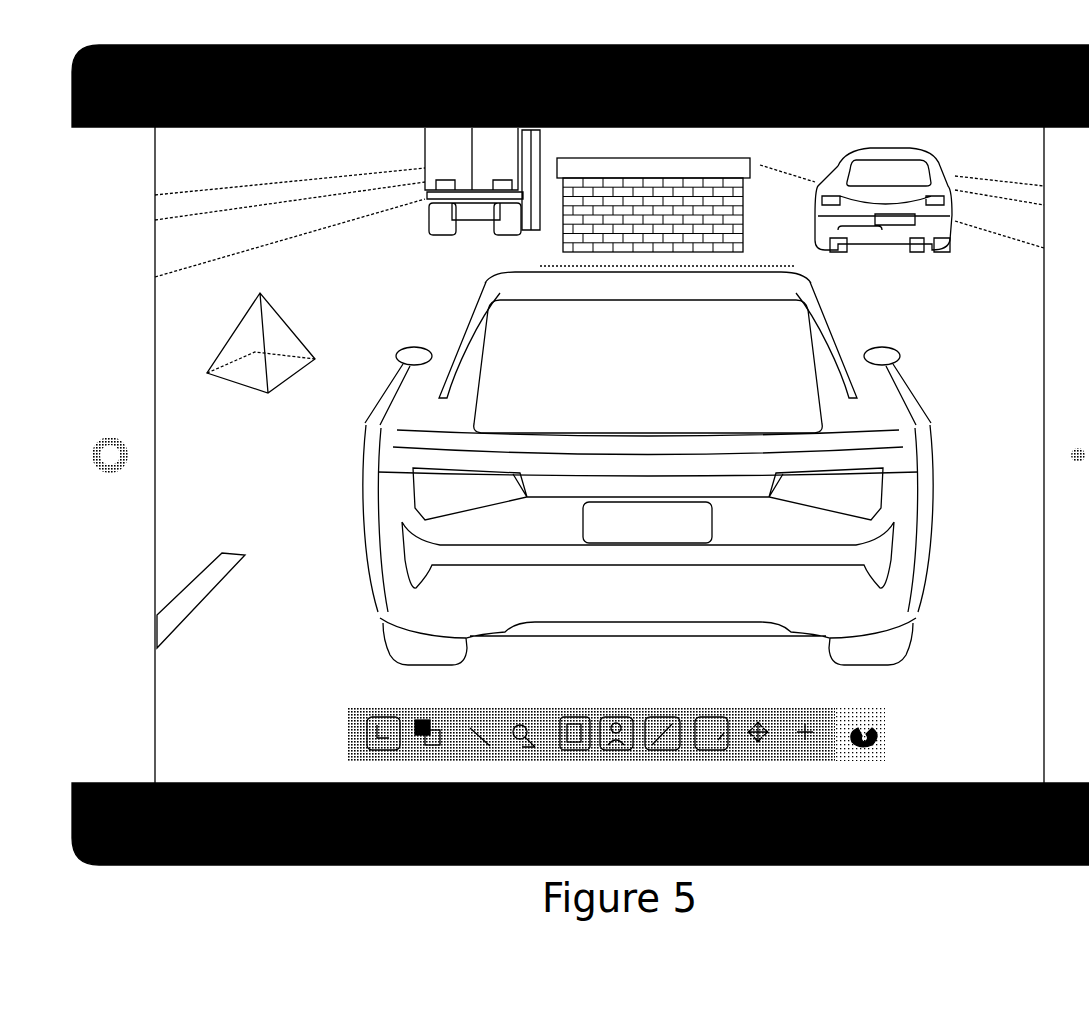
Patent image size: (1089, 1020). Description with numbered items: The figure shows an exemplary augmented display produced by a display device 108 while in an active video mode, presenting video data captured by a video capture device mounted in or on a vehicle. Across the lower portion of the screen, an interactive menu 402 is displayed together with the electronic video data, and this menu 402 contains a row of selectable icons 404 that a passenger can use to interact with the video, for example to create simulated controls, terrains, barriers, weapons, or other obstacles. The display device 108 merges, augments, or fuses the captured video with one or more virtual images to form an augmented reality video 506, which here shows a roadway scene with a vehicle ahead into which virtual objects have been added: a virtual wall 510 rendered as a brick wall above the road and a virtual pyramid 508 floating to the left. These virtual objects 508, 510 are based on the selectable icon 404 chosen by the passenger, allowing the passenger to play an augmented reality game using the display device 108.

The display device 108 is at (638, 43).
The interactive menu 402 is at (348, 705).
The selectable icons 404 is at (865, 706).
The augmented reality video 506 is at (599, 396).
The virtual pyramid 508 is at (283, 297).
The virtual wall 510 is at (753, 193).